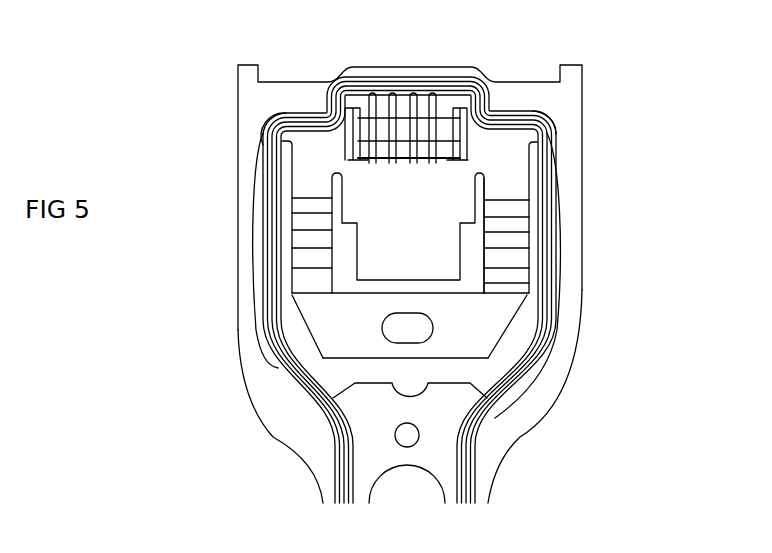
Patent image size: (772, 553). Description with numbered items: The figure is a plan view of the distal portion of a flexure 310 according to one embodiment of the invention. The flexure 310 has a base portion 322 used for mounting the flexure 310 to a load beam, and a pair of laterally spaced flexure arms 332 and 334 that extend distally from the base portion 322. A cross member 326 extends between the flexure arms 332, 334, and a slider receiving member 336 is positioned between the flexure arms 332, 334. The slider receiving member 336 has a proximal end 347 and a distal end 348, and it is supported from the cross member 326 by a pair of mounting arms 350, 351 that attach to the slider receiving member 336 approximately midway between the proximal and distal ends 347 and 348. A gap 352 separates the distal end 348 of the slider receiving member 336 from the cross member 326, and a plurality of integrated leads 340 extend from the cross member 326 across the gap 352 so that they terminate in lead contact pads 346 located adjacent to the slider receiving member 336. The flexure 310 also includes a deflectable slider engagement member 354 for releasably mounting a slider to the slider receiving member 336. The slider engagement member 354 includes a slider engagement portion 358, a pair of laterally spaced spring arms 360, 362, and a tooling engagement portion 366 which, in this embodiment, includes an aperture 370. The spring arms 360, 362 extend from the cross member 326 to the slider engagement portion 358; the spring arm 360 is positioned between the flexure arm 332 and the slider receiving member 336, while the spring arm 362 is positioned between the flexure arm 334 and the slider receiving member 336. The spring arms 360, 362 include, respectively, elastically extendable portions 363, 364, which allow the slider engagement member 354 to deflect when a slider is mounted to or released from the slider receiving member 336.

The flexure 310 is at (104, 75).
The base portion 322 is at (447, 452).
The cross member 326 is at (506, 82).
The flexure arm 332 is at (582, 235).
The flexure arm 334 is at (250, 244).
The slider receiving member 336 is at (428, 259).
The integrated leads 340 is at (254, 121).
The lead contact pads 346 is at (458, 167).
The proximal end 347 is at (535, 284).
The distal end 348 is at (484, 197).
The mounting arm 350 is at (480, 212).
The mounting arm 351 is at (330, 198).
The gap 352 is at (460, 166).
The slider engagement member 354 is at (515, 345).
The slider engagement portion 358 is at (366, 307).
The spring arm 360 is at (536, 289).
The spring arm 362 is at (283, 279).
The elastically extendable portion 363 is at (492, 248).
The elastically extendable portion 364 is at (292, 221).
The tooling engagement portion 366 is at (394, 353).
The aperture 370 is at (436, 327).